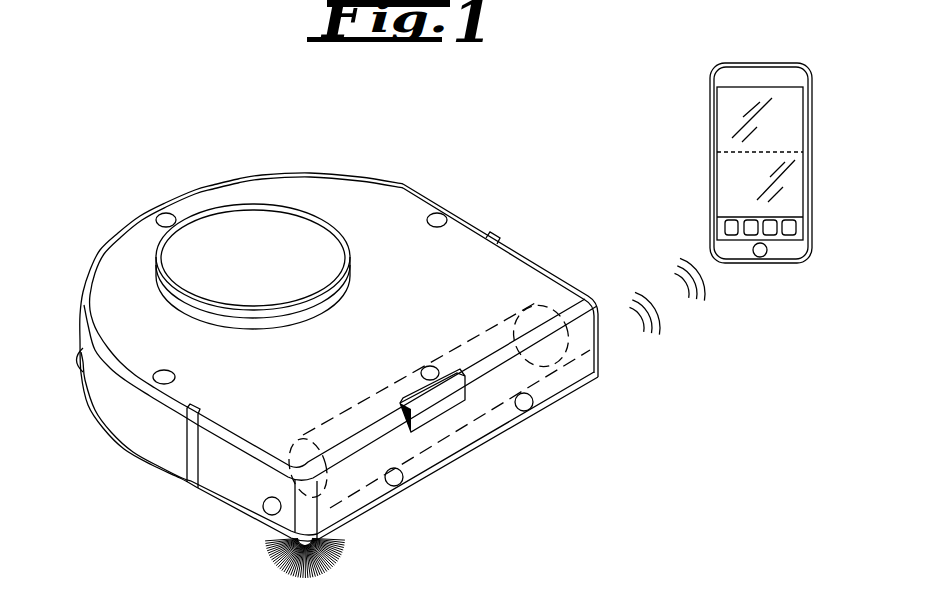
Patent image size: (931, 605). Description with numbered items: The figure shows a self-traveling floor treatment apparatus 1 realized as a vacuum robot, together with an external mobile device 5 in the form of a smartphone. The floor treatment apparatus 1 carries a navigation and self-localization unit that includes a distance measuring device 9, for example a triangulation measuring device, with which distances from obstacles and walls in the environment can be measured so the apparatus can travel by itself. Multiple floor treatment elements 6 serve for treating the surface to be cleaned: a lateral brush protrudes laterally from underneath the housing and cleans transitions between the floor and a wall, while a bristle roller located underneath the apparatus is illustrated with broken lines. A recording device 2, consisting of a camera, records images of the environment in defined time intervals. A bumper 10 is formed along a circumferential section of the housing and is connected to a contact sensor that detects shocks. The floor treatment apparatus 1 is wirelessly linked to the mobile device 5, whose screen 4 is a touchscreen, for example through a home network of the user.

The floor treatment apparatus 1 is at (476, 181).
The recording device 2 is at (440, 404).
The screen 4 is at (735, 183).
The mobile device 5 is at (690, 113).
The floor treatment element 6 is at (272, 557).
The distance measuring device 9 is at (283, 220).
The bumper 10 is at (430, 452).